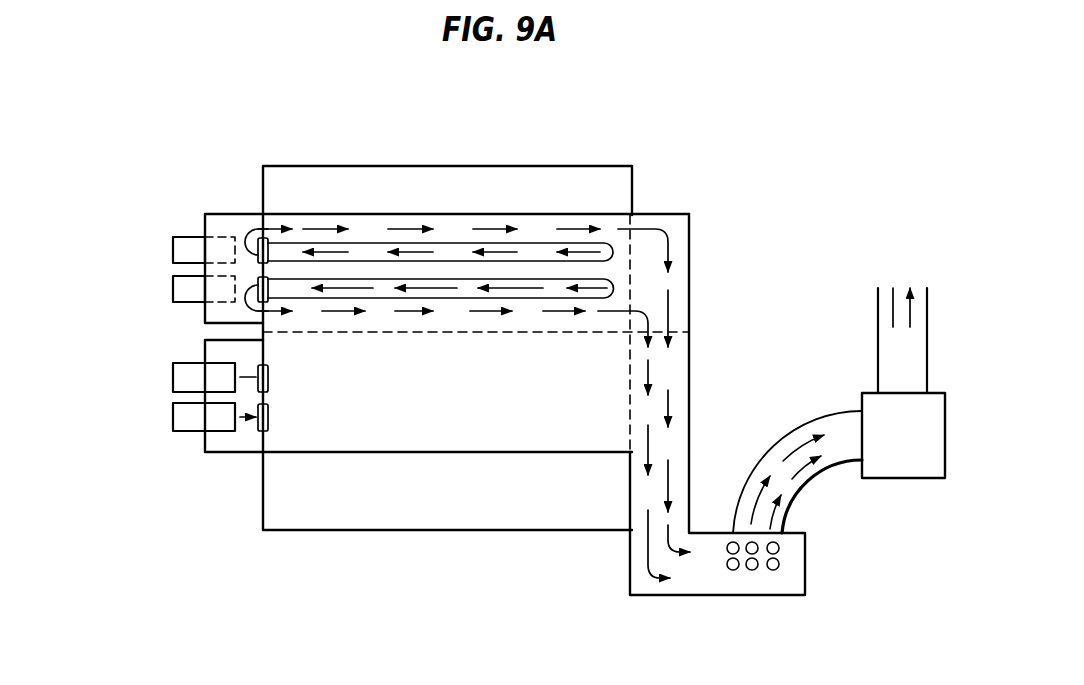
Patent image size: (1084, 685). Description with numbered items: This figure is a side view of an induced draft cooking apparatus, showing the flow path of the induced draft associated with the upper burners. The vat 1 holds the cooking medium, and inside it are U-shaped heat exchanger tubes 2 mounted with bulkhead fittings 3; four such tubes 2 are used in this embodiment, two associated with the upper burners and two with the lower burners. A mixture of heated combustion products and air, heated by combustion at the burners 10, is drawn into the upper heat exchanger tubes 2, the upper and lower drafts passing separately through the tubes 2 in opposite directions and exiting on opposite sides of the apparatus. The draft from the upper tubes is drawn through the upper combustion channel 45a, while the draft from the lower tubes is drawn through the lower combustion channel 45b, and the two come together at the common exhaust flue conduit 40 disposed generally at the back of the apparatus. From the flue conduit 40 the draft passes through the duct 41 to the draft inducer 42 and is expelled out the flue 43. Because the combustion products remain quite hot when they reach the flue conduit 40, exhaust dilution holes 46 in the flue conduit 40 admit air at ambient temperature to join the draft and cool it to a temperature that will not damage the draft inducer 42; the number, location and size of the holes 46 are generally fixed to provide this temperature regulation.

The vat 1 is at (608, 163).
The heat exchanger tubes 2 is at (433, 279).
The bulkhead fittings 3 is at (256, 436).
The burners 10 is at (160, 251).
The exhaust flue conduit 40 is at (685, 598).
The duct 41 is at (784, 441).
The draft inducer 42 is at (909, 484).
The flue 43 is at (875, 313).
The upper combustion channel 45a is at (375, 273).
The lower combustion channel 45b is at (367, 421).
The exhaust dilution holes 46 is at (764, 576).